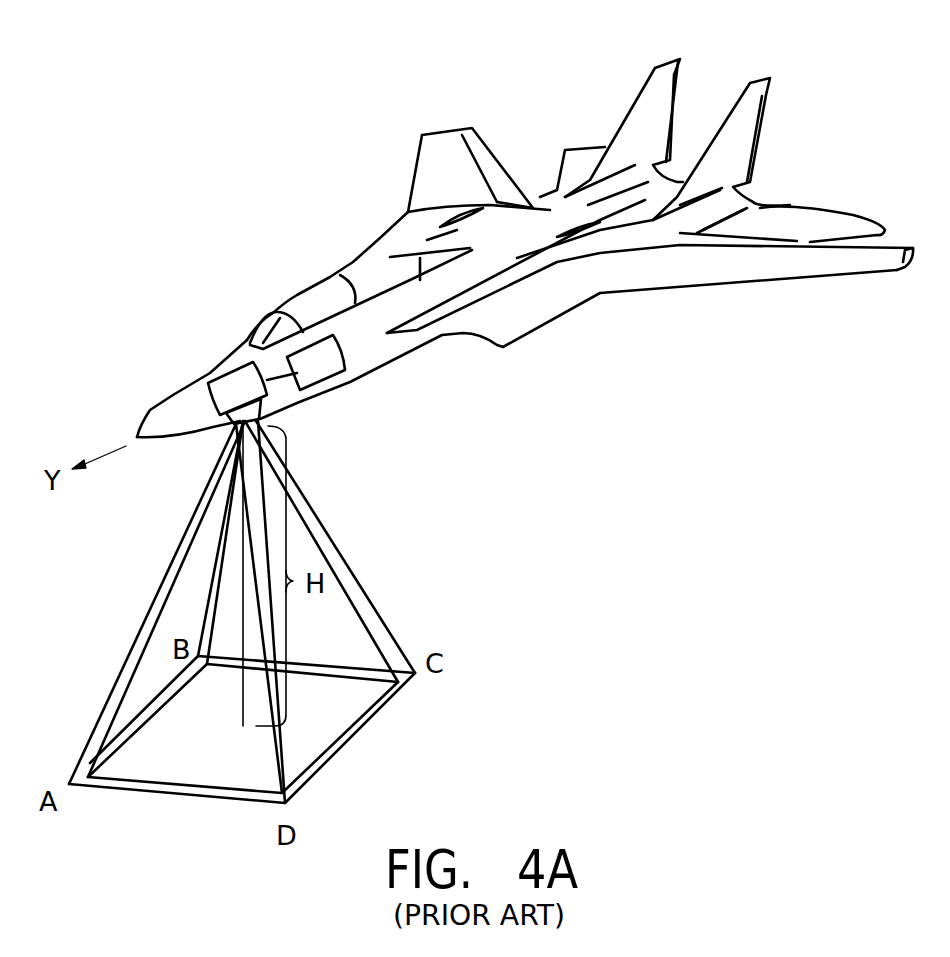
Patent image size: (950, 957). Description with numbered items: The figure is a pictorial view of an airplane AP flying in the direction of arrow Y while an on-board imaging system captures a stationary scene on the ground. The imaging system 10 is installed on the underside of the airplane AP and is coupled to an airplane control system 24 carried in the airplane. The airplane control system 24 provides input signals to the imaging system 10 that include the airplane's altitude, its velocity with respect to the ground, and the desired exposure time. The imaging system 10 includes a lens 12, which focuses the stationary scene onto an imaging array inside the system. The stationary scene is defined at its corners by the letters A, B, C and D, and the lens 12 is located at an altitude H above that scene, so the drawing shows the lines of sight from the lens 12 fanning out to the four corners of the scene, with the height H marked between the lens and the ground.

The imaging system 10 is at (220, 390).
The airplane control system 24 is at (320, 375).
The lens 12 is at (268, 425).